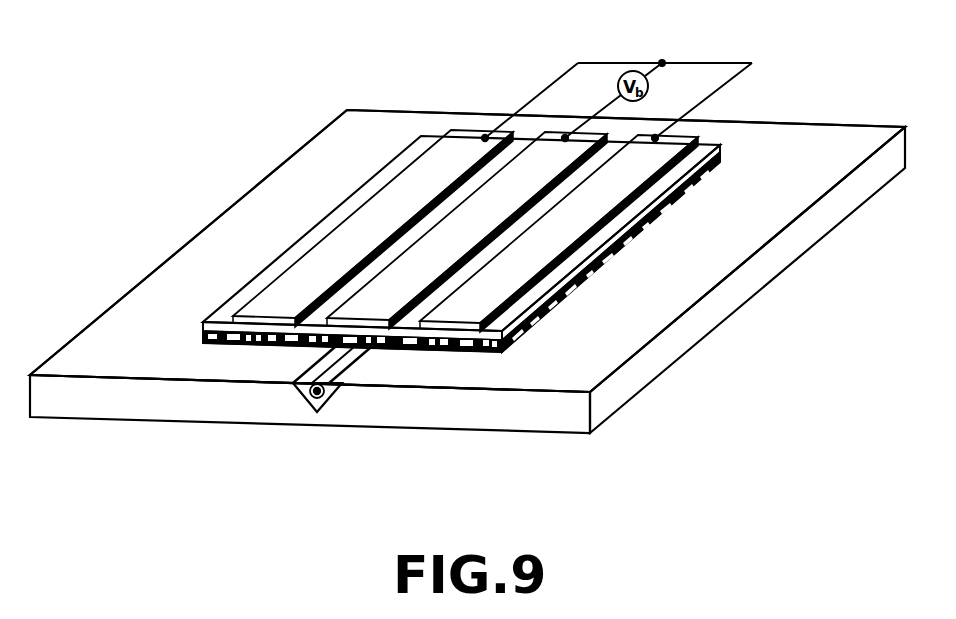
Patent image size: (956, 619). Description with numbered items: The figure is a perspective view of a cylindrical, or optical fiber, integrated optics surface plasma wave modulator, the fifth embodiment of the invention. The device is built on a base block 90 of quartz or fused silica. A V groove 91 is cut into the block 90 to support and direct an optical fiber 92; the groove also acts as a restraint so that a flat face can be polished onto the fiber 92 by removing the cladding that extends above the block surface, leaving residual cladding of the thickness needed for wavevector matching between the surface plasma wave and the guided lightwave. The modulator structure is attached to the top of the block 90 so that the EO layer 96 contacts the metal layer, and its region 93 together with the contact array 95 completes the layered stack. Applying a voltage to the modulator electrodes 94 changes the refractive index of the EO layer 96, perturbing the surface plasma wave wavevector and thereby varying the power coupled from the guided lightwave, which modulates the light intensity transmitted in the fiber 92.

The base block 90 is at (97, 414).
The V groove 91 is at (330, 372).
The optical fiber 92 is at (300, 392).
The substrate top surface / ground plane 93 is at (370, 151).
The modulator electrodes 94 is at (640, 130).
The contact array 95 is at (622, 244).
The EO layer 96 is at (256, 279).